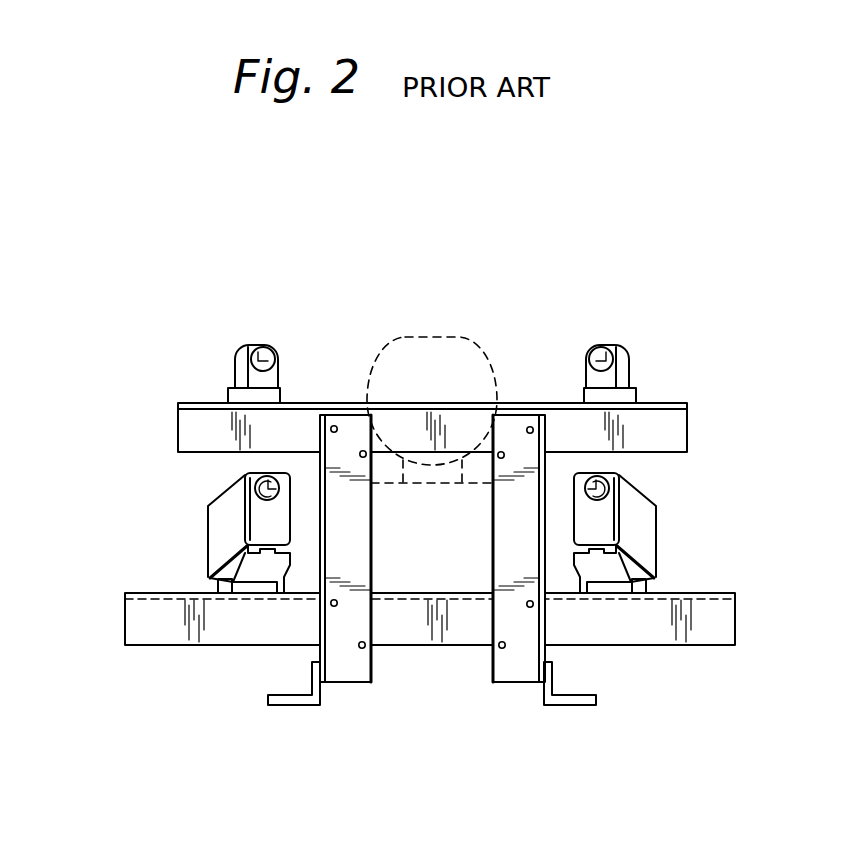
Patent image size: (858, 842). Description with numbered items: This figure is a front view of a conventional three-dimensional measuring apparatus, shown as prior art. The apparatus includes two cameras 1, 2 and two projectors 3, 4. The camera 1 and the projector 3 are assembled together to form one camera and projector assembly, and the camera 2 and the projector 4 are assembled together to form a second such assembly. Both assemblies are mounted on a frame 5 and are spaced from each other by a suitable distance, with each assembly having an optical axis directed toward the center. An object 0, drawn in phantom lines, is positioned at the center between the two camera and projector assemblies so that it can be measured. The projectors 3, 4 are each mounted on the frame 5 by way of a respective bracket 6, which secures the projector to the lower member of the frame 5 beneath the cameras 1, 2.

The object 0 is at (410, 360).
The camera 1 is at (245, 356).
The camera 2 is at (622, 357).
The projector 3 is at (227, 528).
The projector 4 is at (637, 530).
The frame 5 is at (448, 655).
The bracket 6 is at (262, 573).